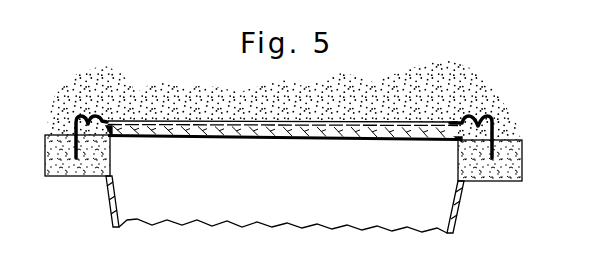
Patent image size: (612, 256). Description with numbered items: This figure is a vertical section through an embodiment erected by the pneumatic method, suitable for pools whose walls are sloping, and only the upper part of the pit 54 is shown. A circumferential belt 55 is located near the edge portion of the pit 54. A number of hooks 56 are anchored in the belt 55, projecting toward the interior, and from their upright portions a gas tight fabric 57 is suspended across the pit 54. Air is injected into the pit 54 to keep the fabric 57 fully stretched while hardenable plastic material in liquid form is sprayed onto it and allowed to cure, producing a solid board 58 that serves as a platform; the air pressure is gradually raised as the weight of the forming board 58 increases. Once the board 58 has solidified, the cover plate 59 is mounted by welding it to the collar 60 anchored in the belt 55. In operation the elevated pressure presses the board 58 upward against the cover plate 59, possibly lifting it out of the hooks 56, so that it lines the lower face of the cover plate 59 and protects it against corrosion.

The pit 54 is at (435, 204).
The circumferential belt 55 is at (514, 165).
The hooks 56 is at (112, 136).
The gas tight fabric 57 is at (206, 137).
The board 58 is at (287, 138).
The cover plate 59 is at (233, 121).
The collar 60 is at (500, 132).